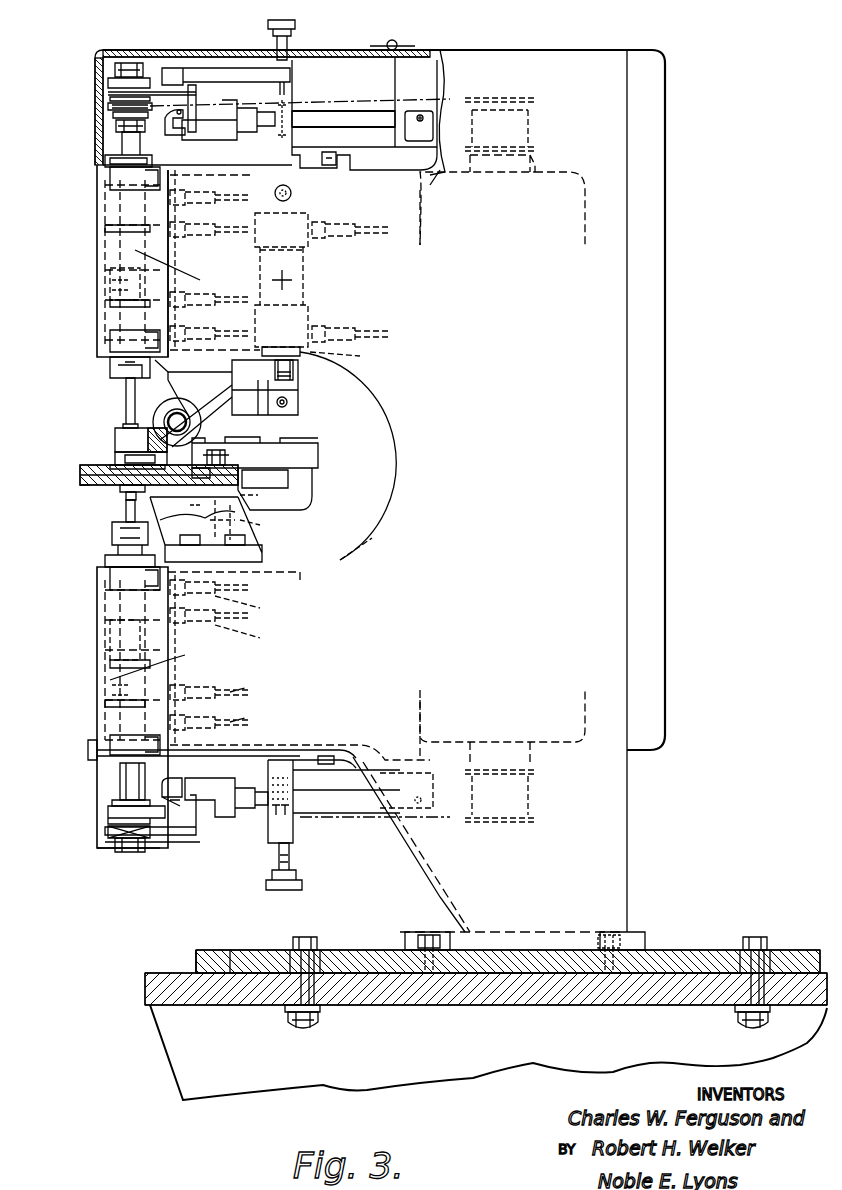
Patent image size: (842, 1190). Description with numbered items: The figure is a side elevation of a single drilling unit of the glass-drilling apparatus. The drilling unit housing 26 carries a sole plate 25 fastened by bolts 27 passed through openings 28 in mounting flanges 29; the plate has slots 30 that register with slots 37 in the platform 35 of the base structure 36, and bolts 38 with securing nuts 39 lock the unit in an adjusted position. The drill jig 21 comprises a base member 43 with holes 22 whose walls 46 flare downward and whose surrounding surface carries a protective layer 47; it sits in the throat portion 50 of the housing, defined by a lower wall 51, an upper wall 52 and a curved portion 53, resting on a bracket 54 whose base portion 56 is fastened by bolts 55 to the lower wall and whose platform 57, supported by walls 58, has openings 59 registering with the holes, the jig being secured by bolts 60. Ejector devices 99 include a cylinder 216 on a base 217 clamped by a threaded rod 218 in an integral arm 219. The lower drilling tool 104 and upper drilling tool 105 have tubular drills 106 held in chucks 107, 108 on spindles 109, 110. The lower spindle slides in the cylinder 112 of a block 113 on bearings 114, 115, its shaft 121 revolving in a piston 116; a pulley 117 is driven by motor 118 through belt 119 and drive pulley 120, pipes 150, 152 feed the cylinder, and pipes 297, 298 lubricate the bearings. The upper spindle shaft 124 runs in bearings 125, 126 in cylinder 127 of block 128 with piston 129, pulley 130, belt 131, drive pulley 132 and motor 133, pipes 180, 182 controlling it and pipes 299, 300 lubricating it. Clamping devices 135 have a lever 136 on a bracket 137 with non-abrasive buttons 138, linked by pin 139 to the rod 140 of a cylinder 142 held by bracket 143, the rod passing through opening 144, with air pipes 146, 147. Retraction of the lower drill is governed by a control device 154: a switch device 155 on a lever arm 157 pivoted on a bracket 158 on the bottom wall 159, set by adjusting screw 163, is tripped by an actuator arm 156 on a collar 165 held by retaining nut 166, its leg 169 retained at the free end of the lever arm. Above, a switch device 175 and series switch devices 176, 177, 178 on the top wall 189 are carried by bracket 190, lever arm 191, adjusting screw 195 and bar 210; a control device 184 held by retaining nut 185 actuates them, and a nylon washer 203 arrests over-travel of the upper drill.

The drill jig 21 is at (68, 482).
The hole 22 is at (120, 455).
The sole plate 25 is at (212, 948).
The drilling unit housing 26 is at (583, 444).
The bolt 27 is at (608, 932).
The opening 28 is at (647, 932).
The mounting flange 29 is at (505, 930).
The slot 30 is at (690, 950).
The platform 35 is at (136, 988).
The base structure 36 is at (165, 1045).
The slot 37 is at (768, 1005).
The bolt 38 is at (760, 936).
The securing nut 39 is at (740, 1018).
The base member 43 is at (82, 484).
The hole wall 46 is at (120, 488).
The layer of protective material 47 is at (112, 466).
The throat portion 50 is at (391, 412).
The lower wall 51 is at (275, 575).
The upper wall 52 is at (262, 343).
The curved portion 53 is at (355, 552).
The bracket 54 is at (230, 498).
The bolt 55 is at (208, 525).
The base portion 56 is at (262, 550).
The platform 57 is at (245, 485).
The supporting wall 58 is at (262, 497).
The opening 59 is at (128, 498).
The bolt 60 is at (228, 458).
The ejector device 99 is at (331, 450).
The lower drilling tool 104 is at (84, 622).
The upper drilling tool 105 is at (82, 224).
The tubular drill 106 is at (125, 392).
The chuck 107 is at (112, 550).
The chuck 108 is at (110, 366).
The lower spindle 109 is at (110, 636).
The upper spindle 110 is at (104, 292).
The cylinder 112 is at (100, 683).
The block 113 is at (105, 695).
The bearing 114 is at (108, 732).
The bearing 115 is at (108, 590).
The piston 116 is at (162, 665).
The pulley 117 is at (112, 802).
The motor 118 is at (555, 748).
The belt 119 is at (110, 812).
The drive pulley 120 is at (540, 820).
The shaft 121 is at (108, 650).
The shaft 124 is at (120, 142).
The bearing 125 is at (110, 340).
The bearing 126 is at (105, 192).
The cylinder 127 is at (108, 272).
The block 128 is at (100, 236).
The piston 129 is at (177, 265).
The pulley 130 is at (113, 118).
The belt 131 is at (108, 104).
The drive pulley 132 is at (535, 98).
The motor 133 is at (555, 170).
The clamping device 135 is at (200, 395).
The lever 136 is at (240, 400).
The bracket 137 is at (202, 425).
The non-abrasive button 138 is at (118, 432).
The pin 139 is at (288, 402).
The rod 140 is at (295, 372).
The cylinder 142 is at (298, 277).
The bracket 143 is at (295, 196).
The opening 144 is at (340, 357).
The pipe 146 is at (372, 333).
The pipe 147 is at (365, 235).
The pipe 150 is at (238, 690).
The pipe 152 is at (235, 628).
The control device 154 is at (225, 840).
The switch device 155 is at (172, 782).
The actuator arm 156 is at (108, 833).
The lever arm 157 is at (315, 800).
The bracket 158 is at (345, 765).
The bottom wall 159 is at (305, 740).
The adjusting screw 163 is at (292, 852).
The collar 165 is at (100, 848).
The retaining nut 166 is at (130, 852).
The leg 169 is at (172, 840).
The switch device 175 is at (190, 130).
The switch device 176 is at (175, 70).
The switch device 177 is at (148, 52).
The switch device 178 is at (192, 52).
The pipe 180 is at (258, 255).
The pipe 182 is at (248, 225).
The control device 184 is at (98, 83).
The retaining nut 185 is at (113, 70).
The top wall 189 is at (340, 180).
The bracket 190 is at (412, 158).
The lever arm 191 is at (333, 110).
The adjusting screw 195 is at (290, 42).
The nylon washer 203 is at (168, 138).
The bar 210 is at (210, 75).
The cylinder 216 is at (265, 440).
The base 217 is at (292, 455).
The threaded rod 218 is at (262, 524).
The integral arm 219 is at (300, 480).
The pipe 297 is at (250, 722).
The pipe 298 is at (250, 600).
The pipe 299 is at (258, 315).
The pipe 300 is at (268, 215).